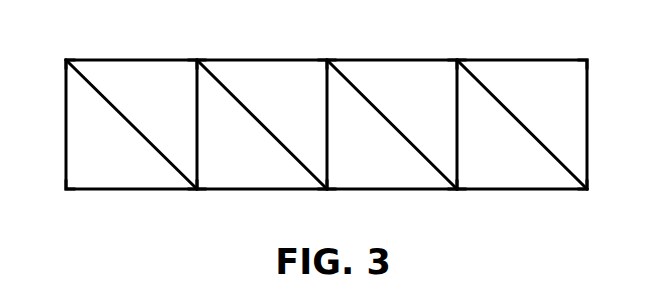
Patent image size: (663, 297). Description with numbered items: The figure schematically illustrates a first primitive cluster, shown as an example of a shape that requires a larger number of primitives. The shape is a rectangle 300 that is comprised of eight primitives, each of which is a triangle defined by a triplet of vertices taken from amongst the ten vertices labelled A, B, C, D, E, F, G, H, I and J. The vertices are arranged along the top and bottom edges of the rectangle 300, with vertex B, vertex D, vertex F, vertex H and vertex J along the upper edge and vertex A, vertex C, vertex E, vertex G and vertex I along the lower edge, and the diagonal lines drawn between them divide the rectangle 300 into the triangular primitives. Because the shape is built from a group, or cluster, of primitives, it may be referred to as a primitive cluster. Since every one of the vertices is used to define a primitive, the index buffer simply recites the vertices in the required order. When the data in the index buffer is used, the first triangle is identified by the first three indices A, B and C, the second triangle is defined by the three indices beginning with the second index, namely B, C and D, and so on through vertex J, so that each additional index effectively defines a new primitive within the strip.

The rectangle 300 is at (107, 251).
The vertex A is at (65, 202).
The vertex B is at (66, 50).
The vertex C is at (197, 202).
The vertex D is at (197, 50).
The vertex E is at (327, 202).
The vertex F is at (327, 50).
The vertex G is at (456, 202).
The vertex H is at (456, 50).
The vertex I is at (584, 202).
The vertex J is at (583, 50).